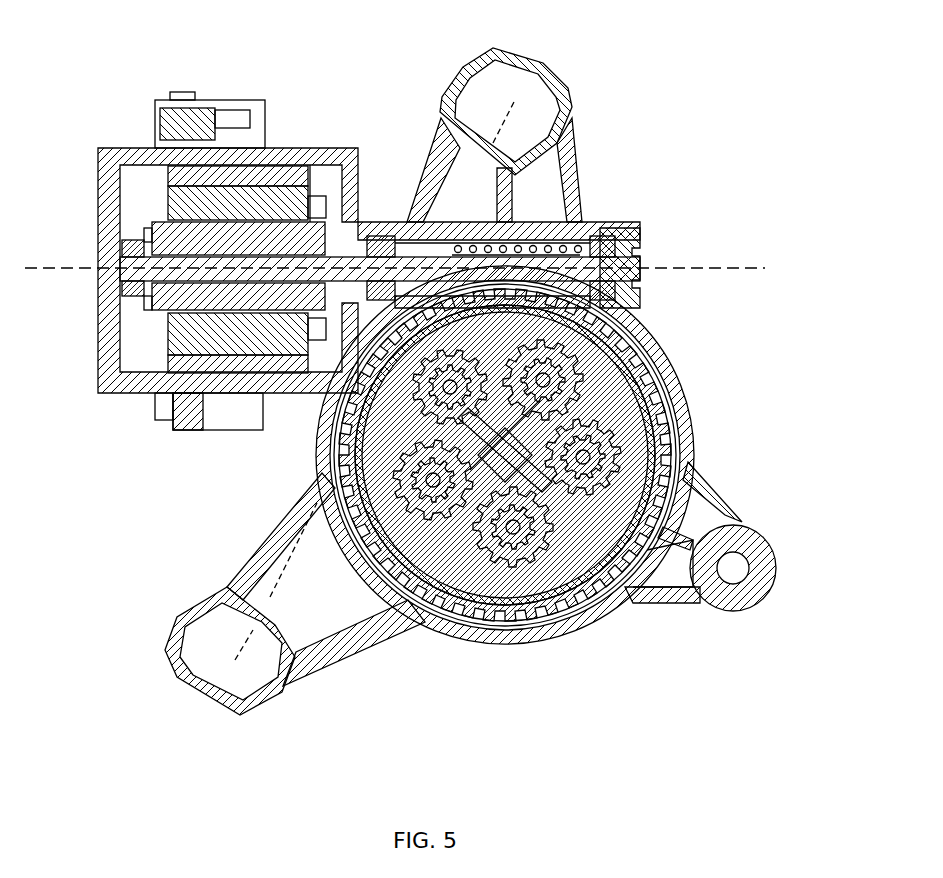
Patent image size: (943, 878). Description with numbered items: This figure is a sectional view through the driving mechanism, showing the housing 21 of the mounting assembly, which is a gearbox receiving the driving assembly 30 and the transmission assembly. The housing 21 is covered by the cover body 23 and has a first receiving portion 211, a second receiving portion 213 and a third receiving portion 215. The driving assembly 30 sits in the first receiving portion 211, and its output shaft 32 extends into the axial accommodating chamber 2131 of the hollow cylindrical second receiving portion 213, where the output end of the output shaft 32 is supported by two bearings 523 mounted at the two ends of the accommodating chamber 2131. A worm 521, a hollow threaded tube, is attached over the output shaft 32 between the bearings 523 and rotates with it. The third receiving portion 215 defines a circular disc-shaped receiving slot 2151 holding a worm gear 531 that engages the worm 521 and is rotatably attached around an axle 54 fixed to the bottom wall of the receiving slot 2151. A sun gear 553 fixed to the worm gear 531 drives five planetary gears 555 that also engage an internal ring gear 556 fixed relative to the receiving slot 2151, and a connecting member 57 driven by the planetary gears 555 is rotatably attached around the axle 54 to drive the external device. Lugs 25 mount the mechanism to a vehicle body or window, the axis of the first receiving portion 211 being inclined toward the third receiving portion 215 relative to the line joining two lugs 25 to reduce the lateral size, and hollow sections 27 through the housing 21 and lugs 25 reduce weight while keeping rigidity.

The housing 21 is at (388, 239).
The cover body 23 is at (100, 375).
The driving assembly 30 is at (265, 190).
The output shaft 32 is at (100, 268).
The first receiving portion 211 is at (327, 177).
The second receiving portion 213 is at (437, 230).
The accommodating chamber 2131 is at (590, 247).
The worm 521 is at (627, 232).
The bearings 523 is at (372, 237).
The third receiving portion 215 is at (652, 345).
The receiving slot 2151 is at (470, 627).
The worm gear 531 is at (677, 418).
The sun gear 553 is at (610, 398).
The planetary gears 555 is at (622, 593).
The internal ring gear 556 is at (570, 620).
The connecting member 57 is at (527, 620).
The axle 54 is at (463, 437).
The lugs 25 is at (518, 68).
The hollow sections 27 is at (577, 160).